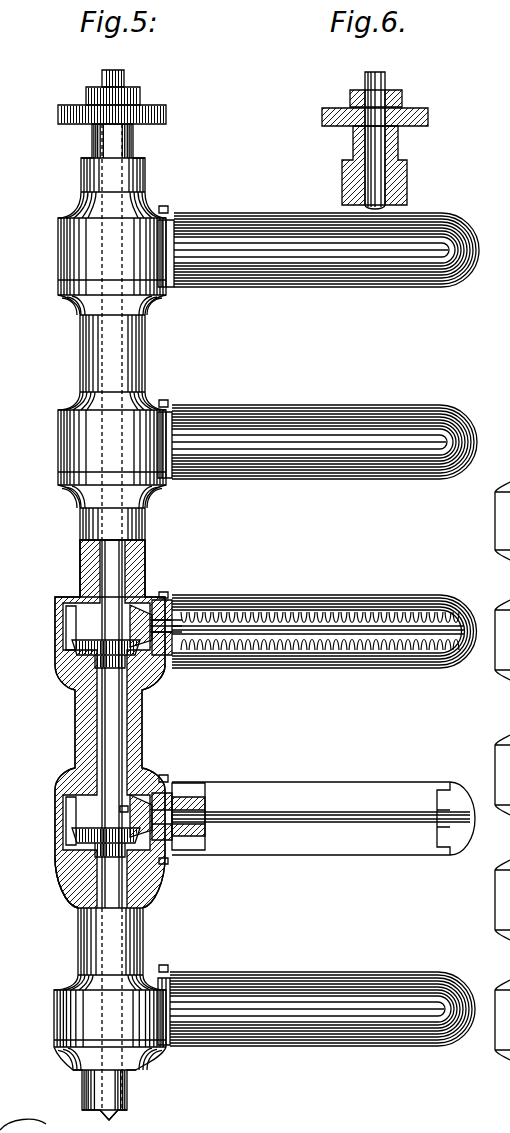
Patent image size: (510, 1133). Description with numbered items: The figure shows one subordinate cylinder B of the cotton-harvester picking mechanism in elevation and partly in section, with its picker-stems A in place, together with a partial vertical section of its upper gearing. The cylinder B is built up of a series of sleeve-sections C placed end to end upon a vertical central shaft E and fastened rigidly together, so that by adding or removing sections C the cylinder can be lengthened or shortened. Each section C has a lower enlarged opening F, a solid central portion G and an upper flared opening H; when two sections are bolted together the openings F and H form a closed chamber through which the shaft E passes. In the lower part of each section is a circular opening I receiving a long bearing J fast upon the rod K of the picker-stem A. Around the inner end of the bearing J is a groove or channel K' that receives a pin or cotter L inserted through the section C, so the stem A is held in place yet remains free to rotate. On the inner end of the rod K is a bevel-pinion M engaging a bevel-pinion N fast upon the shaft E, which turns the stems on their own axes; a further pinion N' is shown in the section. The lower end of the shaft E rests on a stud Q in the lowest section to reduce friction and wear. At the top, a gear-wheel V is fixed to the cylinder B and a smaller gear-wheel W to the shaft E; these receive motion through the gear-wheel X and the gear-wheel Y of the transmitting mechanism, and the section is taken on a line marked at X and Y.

In FIG. 5, the picker-stem A is at (324, 629).
In FIG. 5, the subordinate cylinder B is at (106, 622).
In FIG. 5, the section C is at (52, 665).
In FIG. 5, the central shaft E is at (124, 78).
In FIG. 6, the central shaft E is at (385, 84).
In FIG. 5, the lower enlarged opening F is at (123, 802).
In FIG. 5, the solid central portion G is at (145, 530).
In FIG. 5, the upper flared opening H is at (150, 678).
In FIG. 5, the circular opening I is at (178, 783).
In FIG. 5, the bearing J is at (196, 784).
In FIG. 5, the shaft or rod of the picker-stem K is at (310, 721).
In FIG. 5, the groove or channel K' is at (176, 730).
In FIG. 5, the pin or cotter L is at (163, 592).
In FIG. 5, the bevel-pinion M is at (134, 723).
In FIG. 5, the bevel-pinion N is at (106, 738).
In FIG. 5, the gear sleeve N' is at (76, 722).
In FIG. 5, the stud Q is at (111, 1121).
In FIG. 5, the gear-wheel V is at (166, 114).
In FIG. 6, the gear-wheel V is at (428, 117).
In FIG. 5, the smaller gear-wheel W is at (92, 89).
In FIG. 6, the smaller gear-wheel W is at (350, 99).
In FIG. 5, the gear-wheel X is at (114, 66).
In FIG. 5, the gear-wheel Y is at (476, 630).